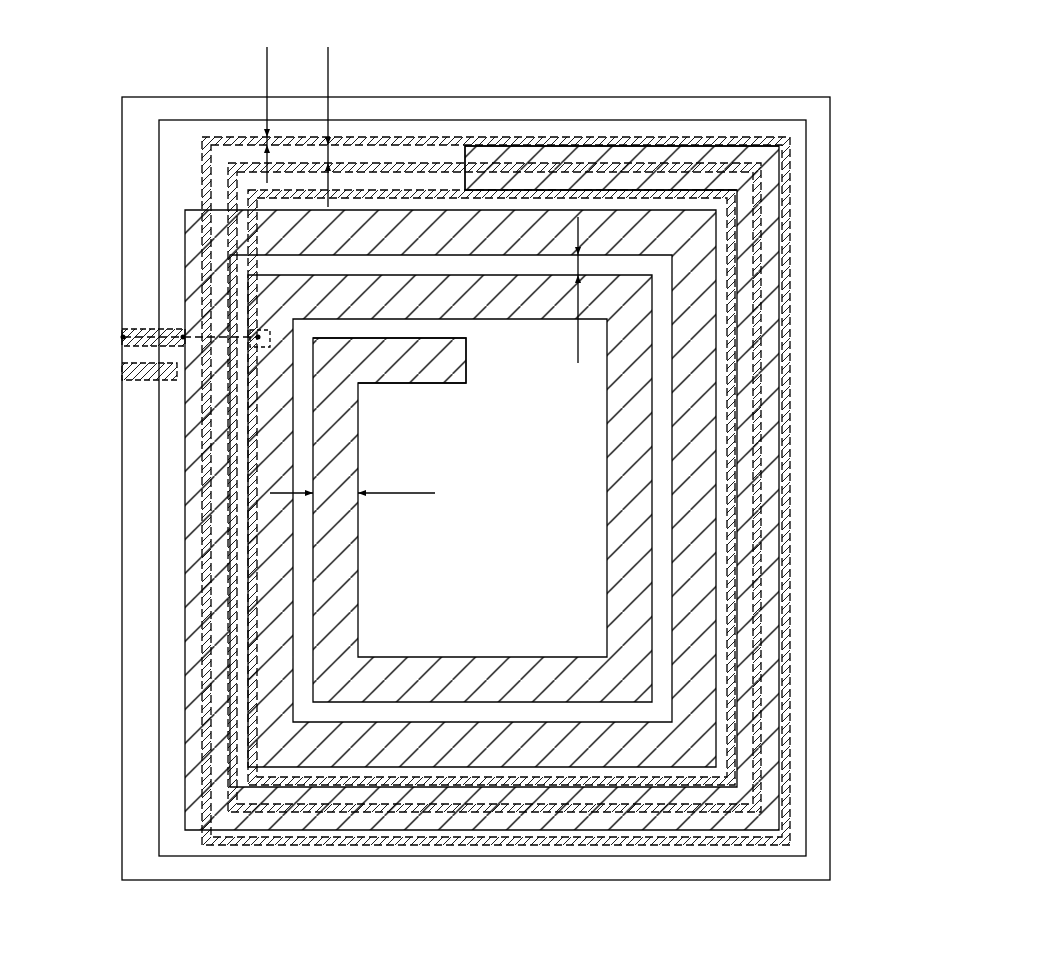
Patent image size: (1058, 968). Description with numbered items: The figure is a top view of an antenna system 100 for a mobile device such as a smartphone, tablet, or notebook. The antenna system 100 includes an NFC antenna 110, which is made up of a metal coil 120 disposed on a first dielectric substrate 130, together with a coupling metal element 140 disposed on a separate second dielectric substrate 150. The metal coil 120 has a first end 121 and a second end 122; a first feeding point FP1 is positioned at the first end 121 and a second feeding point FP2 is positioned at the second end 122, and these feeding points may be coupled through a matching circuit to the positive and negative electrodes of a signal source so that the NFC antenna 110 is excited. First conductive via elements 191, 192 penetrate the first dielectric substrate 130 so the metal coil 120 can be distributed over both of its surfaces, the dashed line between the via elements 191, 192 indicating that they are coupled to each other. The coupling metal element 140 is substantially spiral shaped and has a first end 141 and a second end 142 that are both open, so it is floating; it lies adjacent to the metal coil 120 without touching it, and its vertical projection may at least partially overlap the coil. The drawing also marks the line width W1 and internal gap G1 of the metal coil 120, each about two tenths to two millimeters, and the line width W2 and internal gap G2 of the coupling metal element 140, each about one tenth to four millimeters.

The antenna system 100 is at (88, 50).
The NFC antenna 110 is at (728, 6).
The metal coil 120 is at (388, 135).
The first dielectric substrate 130 is at (122, 148).
The second dielectric substrate 150 is at (176, 118).
The coupling metal element 140 is at (615, 505).
The first end of the coupling metal element 141 is at (467, 363).
The second end of the coupling metal element 142 is at (464, 150).
The first end of the metal coil 121 is at (123, 337).
The second end of the metal coil 122 is at (123, 372).
The first feeding point FP1 is at (123, 337).
The second feeding point FP2 is at (123, 372).
The first conductive via element 191 is at (168, 328).
The first conductive via element 192 is at (258, 347).
The width of the metal coil W1 is at (244, 115).
The internal gap of the metal coil G1 is at (309, 127).
The width of the coupling metal element W2 is at (352, 477).
The internal gap of the coupling metal element G2 is at (559, 290).